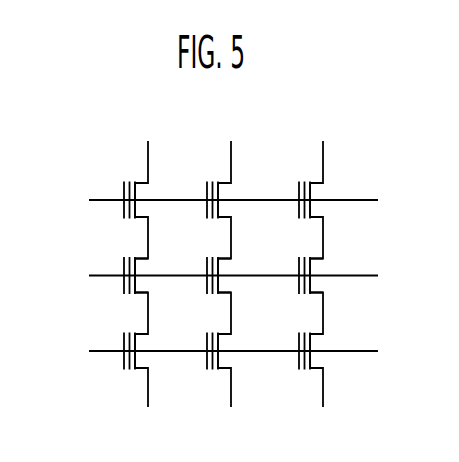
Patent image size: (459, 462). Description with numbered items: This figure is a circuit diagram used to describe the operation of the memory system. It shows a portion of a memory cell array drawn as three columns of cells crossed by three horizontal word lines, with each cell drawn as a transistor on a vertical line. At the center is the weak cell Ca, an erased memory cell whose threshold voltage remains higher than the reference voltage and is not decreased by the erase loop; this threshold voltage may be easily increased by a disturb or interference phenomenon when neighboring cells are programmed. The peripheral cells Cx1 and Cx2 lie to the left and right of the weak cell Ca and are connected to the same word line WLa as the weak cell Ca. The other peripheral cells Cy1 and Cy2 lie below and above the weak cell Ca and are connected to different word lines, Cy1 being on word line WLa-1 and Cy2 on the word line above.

The word line WLa is at (218, 275).
The word line WLa-1 is at (211, 352).
The weak cell Ca is at (229, 281).
The peripheral cell Cx1 is at (148, 282).
The peripheral cell Cx2 is at (324, 281).
The peripheral cell Cy1 is at (232, 358).
The peripheral cell Cy2 is at (233, 206).